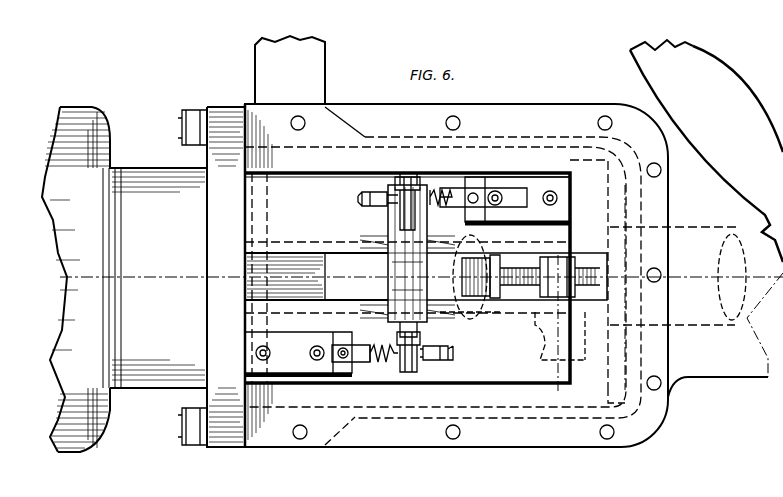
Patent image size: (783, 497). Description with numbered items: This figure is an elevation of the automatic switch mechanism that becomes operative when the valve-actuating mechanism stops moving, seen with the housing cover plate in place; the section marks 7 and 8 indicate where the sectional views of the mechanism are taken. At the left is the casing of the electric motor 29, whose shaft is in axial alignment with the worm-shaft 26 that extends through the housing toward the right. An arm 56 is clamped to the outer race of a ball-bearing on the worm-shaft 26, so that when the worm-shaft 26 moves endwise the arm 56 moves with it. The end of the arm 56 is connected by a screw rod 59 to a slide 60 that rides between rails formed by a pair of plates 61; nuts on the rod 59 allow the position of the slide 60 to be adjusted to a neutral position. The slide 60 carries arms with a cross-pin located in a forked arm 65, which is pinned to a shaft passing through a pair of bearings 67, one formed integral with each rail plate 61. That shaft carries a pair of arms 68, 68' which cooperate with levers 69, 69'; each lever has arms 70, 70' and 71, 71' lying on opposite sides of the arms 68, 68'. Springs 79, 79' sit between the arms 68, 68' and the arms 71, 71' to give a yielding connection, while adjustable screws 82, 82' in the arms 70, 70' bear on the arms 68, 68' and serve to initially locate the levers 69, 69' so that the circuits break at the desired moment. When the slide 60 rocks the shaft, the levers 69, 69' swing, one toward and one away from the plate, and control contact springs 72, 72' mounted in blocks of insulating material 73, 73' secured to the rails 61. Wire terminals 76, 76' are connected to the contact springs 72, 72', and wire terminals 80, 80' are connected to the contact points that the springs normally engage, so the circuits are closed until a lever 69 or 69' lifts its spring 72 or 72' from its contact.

The section line 7- 7 is at (225, 496).
The section line 8 is at (556, 330).
The worm-shaft 26 is at (700, 312).
The electric motor 29 is at (100, 425).
The arm 56 is at (576, 258).
The screw rod 59 is at (495, 300).
The slide 60 is at (468, 298).
The rail plates 61 is at (305, 170).
The forked arm 65 is at (390, 284).
The bearings 67 is at (385, 233).
The arm 68 is at (430, 358).
The arm 68' is at (391, 200).
The lever 69 is at (353, 377).
The lever 69' is at (468, 176).
The arm 70 is at (433, 338).
The arm 70' is at (379, 212).
The arm 71 is at (357, 363).
The arm 71' is at (482, 190).
The contact spring 72 is at (332, 343).
The contact spring 72' is at (490, 186).
The block of insulating material 73 is at (298, 369).
The block of insulating material 73' is at (517, 186).
The wire terminal 76 is at (270, 376).
The wire terminal 76' is at (572, 190).
The spring 79 is at (386, 375).
The spring 79' is at (432, 178).
The wire terminal 80 is at (322, 376).
The wire terminal 80' is at (507, 177).
The adjustable screw 82 is at (457, 354).
The adjustable screw 82' is at (354, 196).